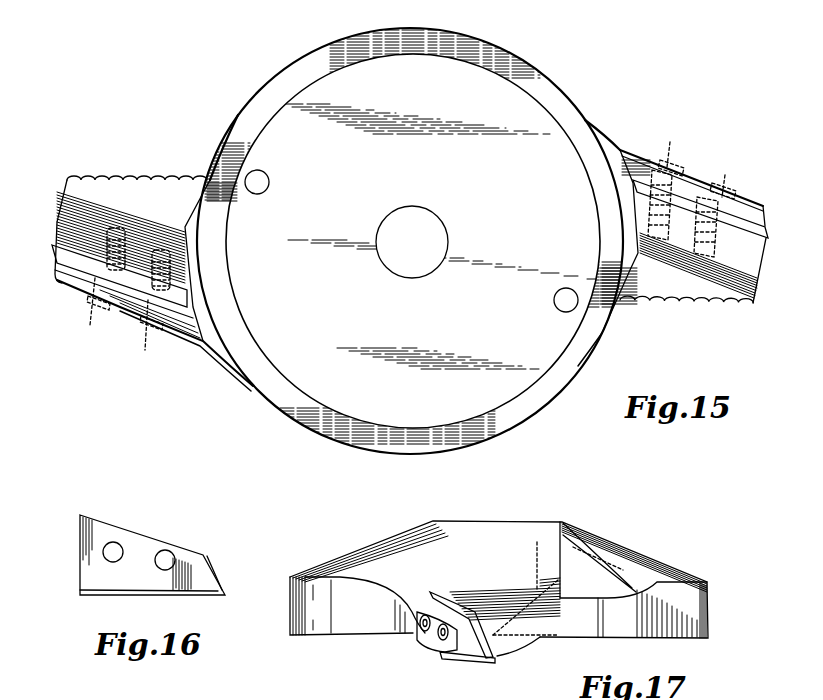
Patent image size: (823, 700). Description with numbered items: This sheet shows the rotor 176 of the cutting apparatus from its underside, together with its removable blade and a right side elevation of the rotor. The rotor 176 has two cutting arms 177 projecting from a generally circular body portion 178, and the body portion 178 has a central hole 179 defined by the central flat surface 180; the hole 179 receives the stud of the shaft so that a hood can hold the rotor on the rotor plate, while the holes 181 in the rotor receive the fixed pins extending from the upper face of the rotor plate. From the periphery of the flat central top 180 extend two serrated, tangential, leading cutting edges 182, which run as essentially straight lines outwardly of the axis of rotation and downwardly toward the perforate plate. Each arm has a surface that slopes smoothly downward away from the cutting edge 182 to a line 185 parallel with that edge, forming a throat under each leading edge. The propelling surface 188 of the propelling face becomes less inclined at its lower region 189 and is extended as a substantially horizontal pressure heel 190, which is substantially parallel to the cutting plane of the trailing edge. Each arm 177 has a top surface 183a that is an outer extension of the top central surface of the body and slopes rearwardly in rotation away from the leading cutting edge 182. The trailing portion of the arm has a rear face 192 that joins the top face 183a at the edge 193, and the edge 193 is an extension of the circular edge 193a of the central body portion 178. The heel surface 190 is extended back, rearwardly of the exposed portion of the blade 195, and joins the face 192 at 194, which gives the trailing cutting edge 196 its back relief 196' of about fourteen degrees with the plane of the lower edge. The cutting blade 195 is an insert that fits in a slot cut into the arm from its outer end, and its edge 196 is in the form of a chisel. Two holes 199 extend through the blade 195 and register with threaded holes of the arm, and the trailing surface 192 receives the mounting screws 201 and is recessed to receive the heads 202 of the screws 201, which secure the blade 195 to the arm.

In FIG. 15, the rotor 176 is at (283, 62).
In FIG. 15, the cutting arm 177 is at (80, 176).
In FIG. 17, the circular body portion 178 is at (600, 538).
In FIG. 15, the central hole 179 is at (412, 208).
In FIG. 17, the central flat surface 180 is at (533, 522).
In FIG. 15, the holes 181 is at (265, 173).
In FIG. 15, the leading cutting edge 182 is at (150, 177).
In FIG. 17, the leading cutting edge 182 is at (560, 575).
In FIG. 17, the top surface 183a is at (505, 598).
In FIG. 17, the line 185 is at (537, 552).
In FIG. 15, the propelling surface 188 is at (97, 208).
In FIG. 17, the propelling surface 188 is at (550, 632).
In FIG. 17, the lower region 189 is at (537, 653).
In FIG. 15, the pressure heel 190 is at (62, 230).
In FIG. 15, the rear face 192 is at (123, 313).
In FIG. 17, the rear face 192 is at (432, 643).
In FIG. 17, the edge 193 is at (420, 598).
In FIG. 17, the circular edge 193a is at (337, 577).
In FIG. 15, the junction 194 is at (65, 272).
In FIG. 15, the cutting blade 195 is at (80, 262).
In FIG. 16, the cutting blade 195 is at (142, 547).
In FIG. 17, the cutting blade 195 is at (485, 658).
In FIG. 15, the trailing cutting edge 196 is at (409, 239).
In FIG. 16, the trailing cutting edge 196 is at (234, 609).
In FIG. 17, the trailing cutting edge 196 is at (521, 681).
In FIG. 16, the back relief 196' is at (81, 606).
In FIG. 17, the back relief 196' is at (437, 679).
In FIG. 16, the holes 199 is at (115, 542).
In FIG. 15, the mounting screws 201 is at (105, 240).
In FIG. 15, the screw heads 202 is at (411, 244).
In FIG. 17, the screw heads 202 is at (420, 628).